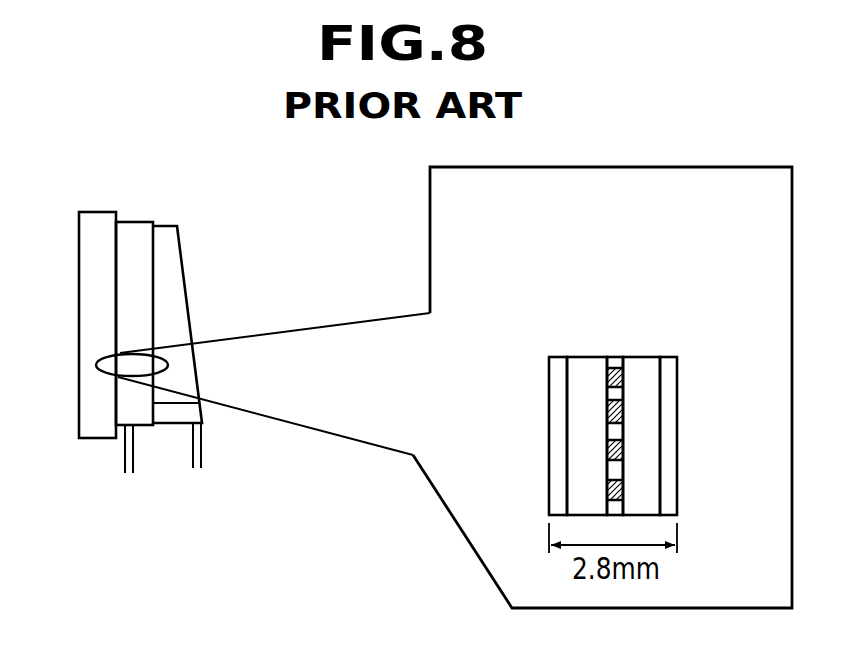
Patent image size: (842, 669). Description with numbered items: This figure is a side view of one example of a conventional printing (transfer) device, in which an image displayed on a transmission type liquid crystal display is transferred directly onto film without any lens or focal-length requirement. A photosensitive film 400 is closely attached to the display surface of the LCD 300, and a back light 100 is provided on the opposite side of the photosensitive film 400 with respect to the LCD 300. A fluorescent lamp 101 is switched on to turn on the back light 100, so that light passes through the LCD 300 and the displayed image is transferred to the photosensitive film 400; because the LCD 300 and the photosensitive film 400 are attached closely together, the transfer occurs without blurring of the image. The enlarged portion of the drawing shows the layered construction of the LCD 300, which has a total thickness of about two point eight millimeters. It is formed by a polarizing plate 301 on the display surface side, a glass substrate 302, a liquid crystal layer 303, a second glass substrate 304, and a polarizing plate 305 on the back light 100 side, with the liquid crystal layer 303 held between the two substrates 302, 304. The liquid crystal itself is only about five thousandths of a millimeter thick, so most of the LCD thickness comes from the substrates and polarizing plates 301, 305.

The photosensitive film 400 is at (97, 224).
The transmission type liquid crystal display (LCD) 300 is at (126, 230).
The back light 100 is at (170, 258).
The fluorescent lamp 101 is at (198, 413).
The polarizing plate 301 is at (551, 402).
The glass substrate 302 is at (588, 362).
The liquid crystal layer 303 is at (612, 360).
The glass substrate 304 is at (645, 362).
The polarizing plate 305 is at (676, 402).